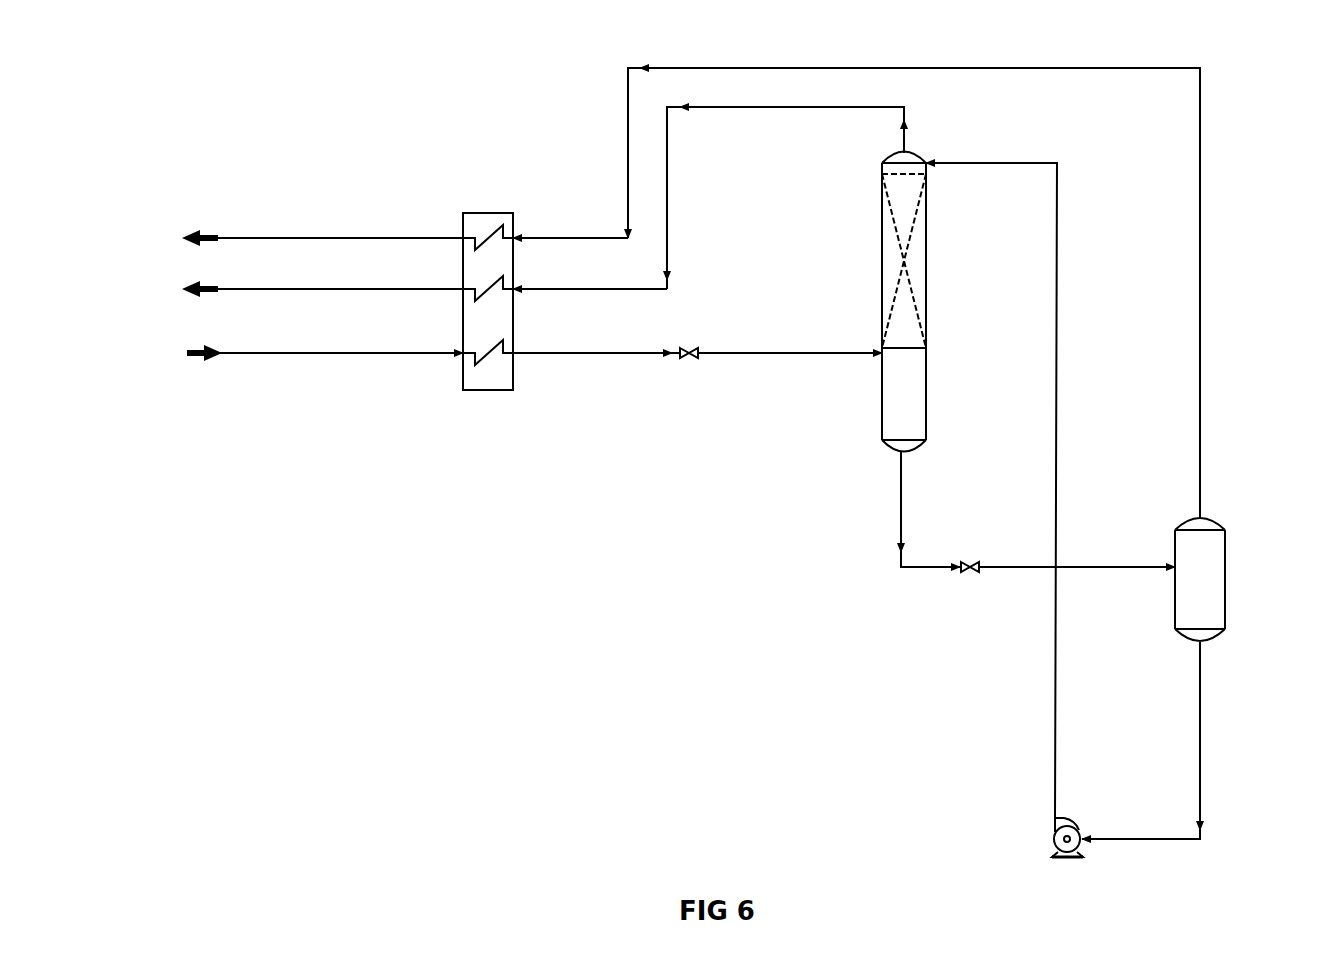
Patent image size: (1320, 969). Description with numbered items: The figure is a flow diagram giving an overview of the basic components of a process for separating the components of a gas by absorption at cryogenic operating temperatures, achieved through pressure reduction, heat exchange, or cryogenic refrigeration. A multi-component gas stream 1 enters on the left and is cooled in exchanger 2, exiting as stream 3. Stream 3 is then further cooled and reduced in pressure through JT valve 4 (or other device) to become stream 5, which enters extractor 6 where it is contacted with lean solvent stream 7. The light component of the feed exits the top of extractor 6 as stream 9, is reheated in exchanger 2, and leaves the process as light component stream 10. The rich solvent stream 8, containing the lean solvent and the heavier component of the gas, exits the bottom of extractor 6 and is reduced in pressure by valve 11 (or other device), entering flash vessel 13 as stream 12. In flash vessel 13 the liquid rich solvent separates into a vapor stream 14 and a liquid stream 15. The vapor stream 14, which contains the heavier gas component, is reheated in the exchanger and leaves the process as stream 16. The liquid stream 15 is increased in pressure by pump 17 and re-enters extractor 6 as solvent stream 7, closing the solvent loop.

The multi-component gas stream 1 is at (325, 338).
The exchanger 2 is at (500, 392).
The stream 3 is at (596, 336).
The JT valve 4 is at (695, 362).
The stream 5 is at (790, 336).
The extractor 6 is at (928, 402).
The lean solvent stream 7 is at (991, 474).
The rich solvent stream 8 is at (917, 509).
The stream 9 is at (785, 182).
The light component stream 10 is at (424, 274).
The valve 11 is at (977, 575).
The stream 12 is at (1077, 549).
The flash vessel 13 is at (1227, 612).
The vapor stream 14 is at (914, 277).
The liquid stream 15 is at (1141, 740).
The stream 16 is at (405, 223).
The pump 17 is at (1063, 855).